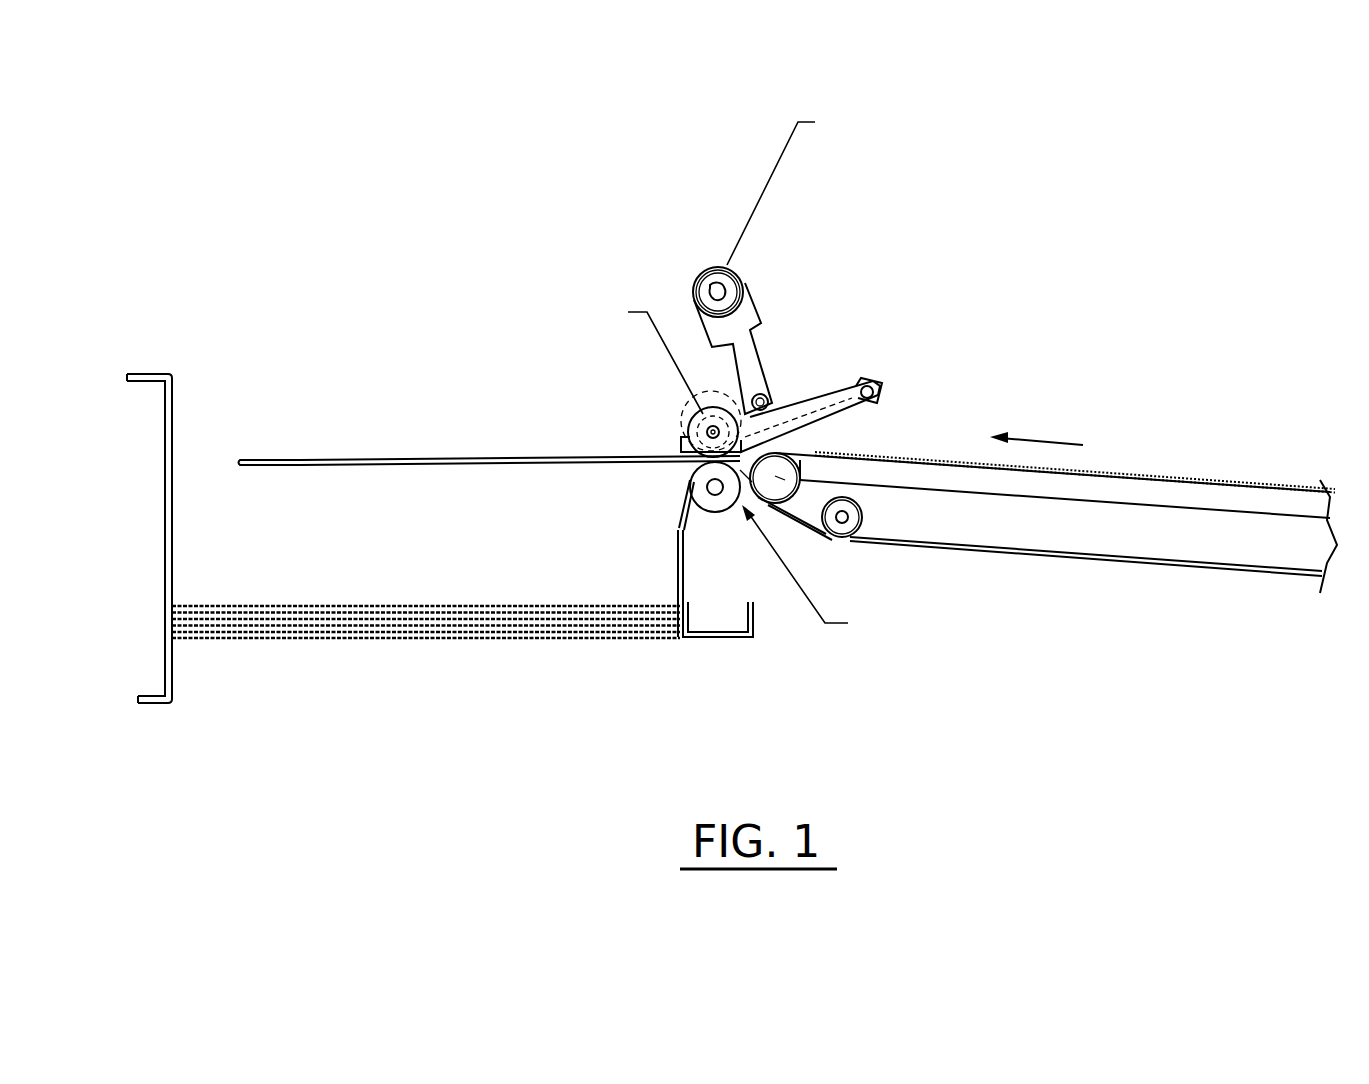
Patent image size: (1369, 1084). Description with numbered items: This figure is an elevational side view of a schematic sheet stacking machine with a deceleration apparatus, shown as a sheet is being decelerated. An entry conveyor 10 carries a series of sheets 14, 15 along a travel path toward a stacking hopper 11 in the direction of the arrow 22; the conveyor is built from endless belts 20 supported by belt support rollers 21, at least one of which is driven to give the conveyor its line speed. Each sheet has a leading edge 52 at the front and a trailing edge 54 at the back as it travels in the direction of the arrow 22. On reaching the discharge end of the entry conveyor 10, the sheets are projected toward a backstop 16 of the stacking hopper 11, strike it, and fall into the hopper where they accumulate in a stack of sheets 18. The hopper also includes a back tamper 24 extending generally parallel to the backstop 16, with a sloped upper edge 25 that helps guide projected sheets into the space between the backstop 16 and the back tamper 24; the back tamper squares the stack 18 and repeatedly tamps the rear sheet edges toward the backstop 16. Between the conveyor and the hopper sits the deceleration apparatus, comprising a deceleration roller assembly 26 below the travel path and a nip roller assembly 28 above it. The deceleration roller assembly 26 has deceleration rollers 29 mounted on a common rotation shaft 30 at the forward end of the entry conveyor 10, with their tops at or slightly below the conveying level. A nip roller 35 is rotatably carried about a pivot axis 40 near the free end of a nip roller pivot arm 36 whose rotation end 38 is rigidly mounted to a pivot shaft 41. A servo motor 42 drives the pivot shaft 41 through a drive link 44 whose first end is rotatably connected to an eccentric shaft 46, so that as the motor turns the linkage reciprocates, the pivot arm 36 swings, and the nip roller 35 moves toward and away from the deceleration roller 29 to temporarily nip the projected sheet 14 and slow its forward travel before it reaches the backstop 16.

The entry conveyor 10 is at (1182, 470).
The stacking hopper 11 is at (232, 558).
The sheet 14 is at (455, 458).
The sheet 15 is at (1255, 483).
The backstop 16 is at (165, 462).
The stack of sheets 18 is at (303, 641).
The endless belt 20 is at (1167, 563).
The belt support roller 21 is at (845, 457).
The arrow 22 is at (1050, 440).
The back tamper 24 is at (700, 577).
The upper edge 25 is at (692, 513).
The deceleration roller assembly 26 is at (757, 502).
The nip roller assembly 28 is at (730, 392).
The deceleration roller 29 is at (710, 507).
The rotation shaft 30 is at (692, 487).
The nip roller 35 is at (698, 422).
The nip roller pivot arm 36 is at (833, 393).
The rotation end 38 is at (878, 388).
The pivot axis 40 is at (682, 440).
The pivot shaft 41 is at (883, 407).
The servo motor 42 is at (697, 280).
The drive link 44 is at (742, 322).
The eccentric shaft 46 is at (750, 292).
The leading edge 52 is at (237, 464).
The trailing edge 54 is at (800, 437).